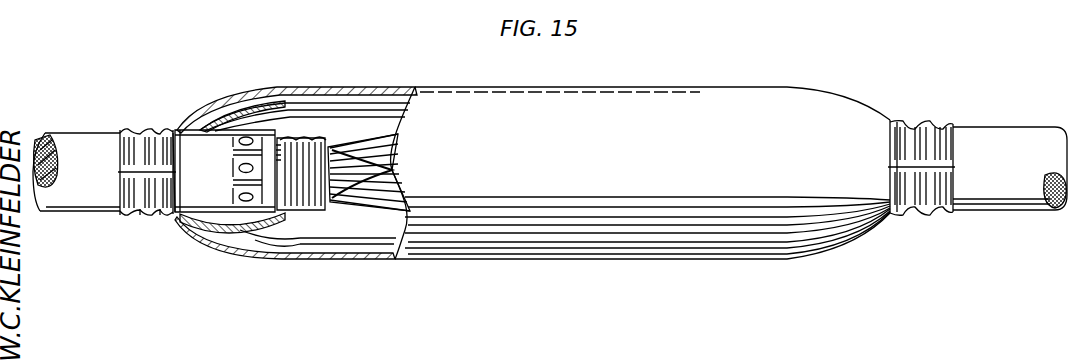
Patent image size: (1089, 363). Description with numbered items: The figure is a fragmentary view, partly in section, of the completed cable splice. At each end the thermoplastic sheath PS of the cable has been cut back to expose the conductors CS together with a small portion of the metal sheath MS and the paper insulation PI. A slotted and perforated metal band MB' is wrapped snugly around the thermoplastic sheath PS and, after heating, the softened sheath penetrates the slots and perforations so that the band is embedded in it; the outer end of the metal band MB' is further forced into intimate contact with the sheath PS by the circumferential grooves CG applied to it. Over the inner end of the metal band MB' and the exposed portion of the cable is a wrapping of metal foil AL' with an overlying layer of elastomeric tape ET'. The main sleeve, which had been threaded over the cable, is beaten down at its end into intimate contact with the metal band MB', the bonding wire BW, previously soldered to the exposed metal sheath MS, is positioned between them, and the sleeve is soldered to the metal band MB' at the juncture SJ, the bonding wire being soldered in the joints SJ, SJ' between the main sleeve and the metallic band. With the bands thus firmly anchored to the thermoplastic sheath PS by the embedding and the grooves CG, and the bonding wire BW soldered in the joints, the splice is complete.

The thermoplastic sheath PS is at (70, 134).
The slotted and perforated metal band MB' is at (528, 140).
The juncture SJ is at (225, 137).
The sleeve joint (end) SJ' is at (161, 138).
The metal foil AL' is at (305, 96).
The bonding wire BW is at (289, 156).
The paper insulation PI is at (328, 147).
The conductors CS is at (383, 140).
The circumferential grooves CG is at (163, 212).
The elastomeric tape ET' is at (288, 252).
The metal sheath MS is at (317, 208).